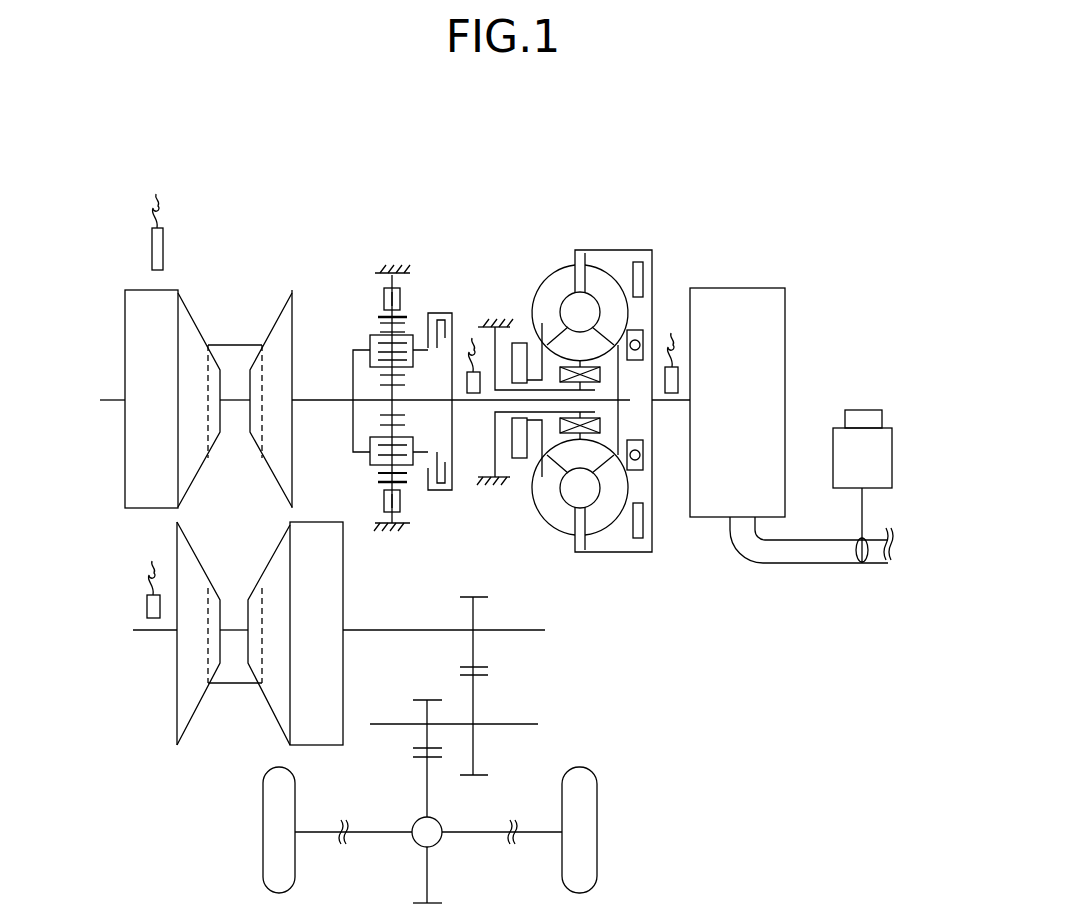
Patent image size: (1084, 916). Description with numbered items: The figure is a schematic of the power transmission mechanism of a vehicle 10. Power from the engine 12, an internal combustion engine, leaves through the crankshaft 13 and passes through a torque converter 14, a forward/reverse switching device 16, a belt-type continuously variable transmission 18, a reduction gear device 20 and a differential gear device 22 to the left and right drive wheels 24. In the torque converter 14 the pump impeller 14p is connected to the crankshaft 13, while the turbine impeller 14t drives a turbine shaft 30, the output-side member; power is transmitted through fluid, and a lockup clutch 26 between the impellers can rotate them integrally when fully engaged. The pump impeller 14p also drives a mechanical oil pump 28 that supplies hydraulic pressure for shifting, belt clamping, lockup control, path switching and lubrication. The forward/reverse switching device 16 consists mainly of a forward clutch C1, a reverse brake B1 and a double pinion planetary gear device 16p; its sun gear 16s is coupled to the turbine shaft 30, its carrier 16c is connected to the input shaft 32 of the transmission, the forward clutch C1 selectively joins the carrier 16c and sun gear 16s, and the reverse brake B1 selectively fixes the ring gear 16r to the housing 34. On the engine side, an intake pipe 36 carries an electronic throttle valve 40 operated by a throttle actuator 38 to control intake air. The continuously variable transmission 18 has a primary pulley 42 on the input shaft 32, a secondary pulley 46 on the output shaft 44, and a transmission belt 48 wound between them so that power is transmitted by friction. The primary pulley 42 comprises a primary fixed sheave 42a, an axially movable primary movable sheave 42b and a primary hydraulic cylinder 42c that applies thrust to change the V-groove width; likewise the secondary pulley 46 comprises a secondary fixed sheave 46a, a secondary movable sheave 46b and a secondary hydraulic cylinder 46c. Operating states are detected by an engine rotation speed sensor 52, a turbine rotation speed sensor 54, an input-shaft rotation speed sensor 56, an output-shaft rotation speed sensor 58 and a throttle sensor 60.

The vehicle 10 is at (745, 146).
The engine 12 is at (785, 340).
The crankshaft 13 is at (668, 405).
The torque converter 14 is at (590, 380).
The pump impeller 14p is at (553, 522).
The turbine impeller 14t is at (600, 522).
The forward/reverse switching device 16 is at (377, 354).
The double pinion planetary gear device 16p is at (392, 248).
The carrier 16c is at (370, 340).
The sun gear 16s is at (378, 416).
The ring gear 16r is at (378, 478).
The belt-type continuously variable transmission 18 is at (414, 835).
The reduction gear device 20 is at (552, 686).
The differential gear device 22 is at (423, 836).
The drive wheels 24 is at (272, 860).
The lockup clutch 26 is at (633, 250).
The mechanical oil pump 28 is at (518, 343).
The turbine shaft 30 is at (470, 403).
The input shaft 32 is at (326, 398).
The housing 34 is at (410, 273).
The intake pipe 36 is at (788, 560).
The throttle actuator 38 is at (894, 458).
The electronic throttle valve 40 is at (872, 565).
The primary pulley 42 is at (176, 408).
The primary fixed sheave 42a is at (270, 325).
The primary movable sheave 42b is at (196, 322).
The primary hydraulic cylinder 42c is at (130, 312).
The output shaft 44 is at (400, 637).
The secondary pulley 46 is at (251, 653).
The secondary fixed sheave 46a is at (178, 693).
The secondary movable sheave 46b is at (275, 695).
The secondary hydraulic cylinder 46c is at (330, 586).
The transmission belt 48 is at (234, 343).
The engine rotation speed sensor 52 is at (658, 357).
The turbine rotation speed sensor 54 is at (463, 368).
The input-shaft rotation speed sensor 56 is at (152, 250).
The output-shaft rotation speed sensor 58 is at (147, 606).
The throttle sensor 60 is at (866, 422).
The reverse brake B1 is at (379, 301).
The forward clutch C1 is at (440, 387).